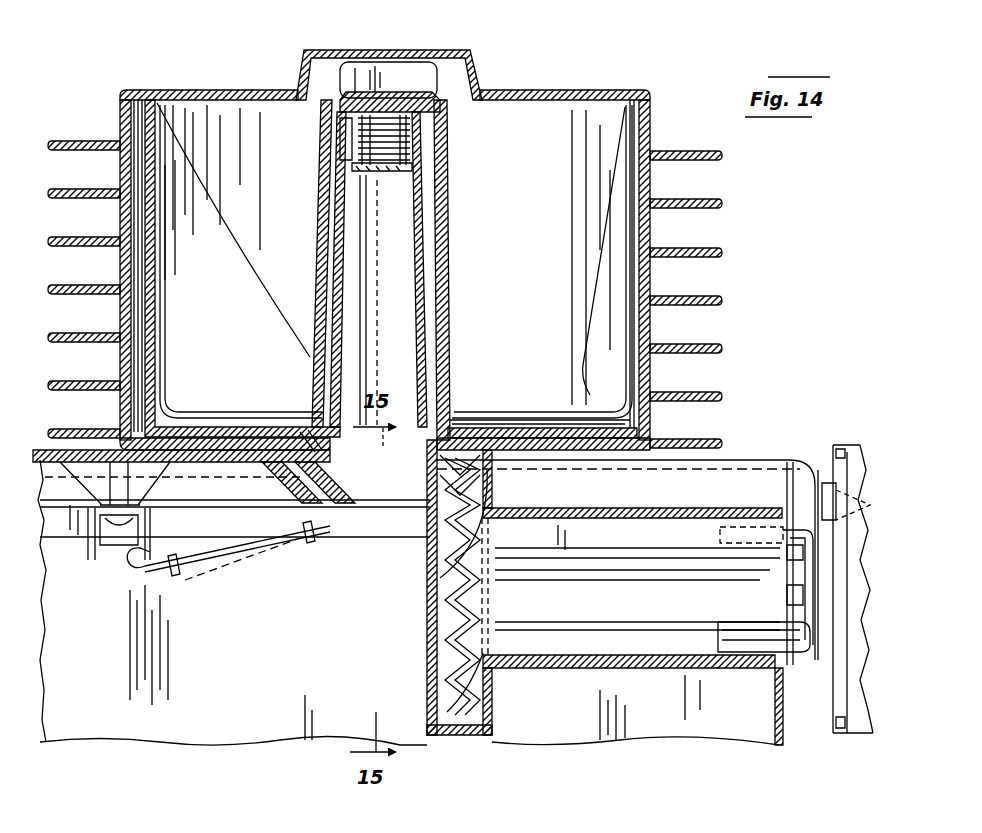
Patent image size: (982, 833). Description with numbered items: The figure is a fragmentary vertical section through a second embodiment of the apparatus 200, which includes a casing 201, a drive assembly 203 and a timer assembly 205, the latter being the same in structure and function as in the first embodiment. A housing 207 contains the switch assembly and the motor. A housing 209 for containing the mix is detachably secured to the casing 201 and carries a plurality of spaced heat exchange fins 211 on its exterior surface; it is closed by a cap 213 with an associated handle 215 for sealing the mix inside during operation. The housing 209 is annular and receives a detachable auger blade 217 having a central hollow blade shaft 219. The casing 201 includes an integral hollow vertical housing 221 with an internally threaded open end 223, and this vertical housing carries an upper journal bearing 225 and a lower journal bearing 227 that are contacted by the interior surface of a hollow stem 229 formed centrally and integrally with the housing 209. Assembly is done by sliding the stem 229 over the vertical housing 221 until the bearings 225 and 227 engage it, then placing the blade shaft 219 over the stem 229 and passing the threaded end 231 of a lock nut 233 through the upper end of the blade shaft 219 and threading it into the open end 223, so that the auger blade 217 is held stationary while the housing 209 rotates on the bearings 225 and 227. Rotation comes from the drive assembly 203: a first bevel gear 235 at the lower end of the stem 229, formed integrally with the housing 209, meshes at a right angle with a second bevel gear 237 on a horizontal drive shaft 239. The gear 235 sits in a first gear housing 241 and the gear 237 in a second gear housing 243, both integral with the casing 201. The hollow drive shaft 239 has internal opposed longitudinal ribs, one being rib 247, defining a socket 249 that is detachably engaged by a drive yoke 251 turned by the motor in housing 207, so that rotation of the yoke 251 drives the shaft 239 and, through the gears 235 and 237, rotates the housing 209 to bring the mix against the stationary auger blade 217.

The apparatus 200 is at (603, 96).
The casing 201 is at (752, 460).
The drive assembly 203 is at (427, 675).
The timer assembly 205 is at (352, 545).
The housing 207 is at (845, 446).
The housing 209 is at (650, 172).
The heat exchange fins 211 is at (97, 165).
The cap 213 is at (520, 98).
The handle 215 is at (460, 54).
The auger blade 217 is at (207, 210).
The blade shaft 219 is at (447, 172).
The vertical housing 221 is at (405, 287).
The open end 223 is at (382, 186).
The upper journal bearing 225 is at (420, 133).
The lower journal bearing 227 is at (450, 418).
The stem 229 is at (430, 218).
The threaded end 231 is at (336, 128).
The lock nut 233 is at (333, 73).
The first bevel gear 235 is at (305, 445).
The second bevel gear 237 is at (482, 472).
The drive shaft 239 is at (640, 508).
The first gear housing 241 is at (275, 485).
The second gear housing 243 is at (427, 628).
The longitudinal rib 247 is at (524, 628).
The socket 249 is at (695, 614).
The drive yoke 251 is at (800, 655).